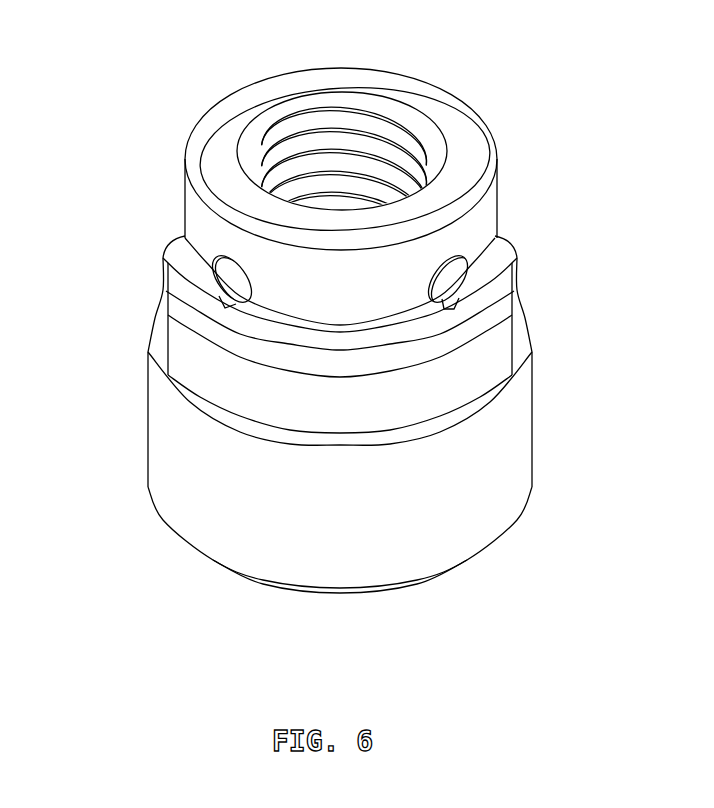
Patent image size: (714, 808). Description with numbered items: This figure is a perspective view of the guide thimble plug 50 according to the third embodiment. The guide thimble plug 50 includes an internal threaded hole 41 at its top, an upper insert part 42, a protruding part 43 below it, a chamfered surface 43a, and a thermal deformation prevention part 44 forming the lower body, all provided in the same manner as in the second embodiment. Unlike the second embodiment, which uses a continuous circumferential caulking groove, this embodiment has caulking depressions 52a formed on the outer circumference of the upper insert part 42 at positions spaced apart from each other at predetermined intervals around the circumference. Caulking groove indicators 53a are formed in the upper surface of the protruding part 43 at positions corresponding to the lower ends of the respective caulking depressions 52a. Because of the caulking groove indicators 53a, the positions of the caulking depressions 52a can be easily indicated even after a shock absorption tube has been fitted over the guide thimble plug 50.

The internal threaded hole 41 is at (341, 143).
The upper insert part 42 is at (483, 223).
The protruding part 43 is at (515, 280).
The chamfered surface 43a is at (163, 259).
The thermal deformation prevention part 44 is at (205, 367).
The guide thimble plug 50 is at (182, 570).
The caulking depressions 52a is at (228, 268).
The caulking groove indicators 53a is at (227, 300).